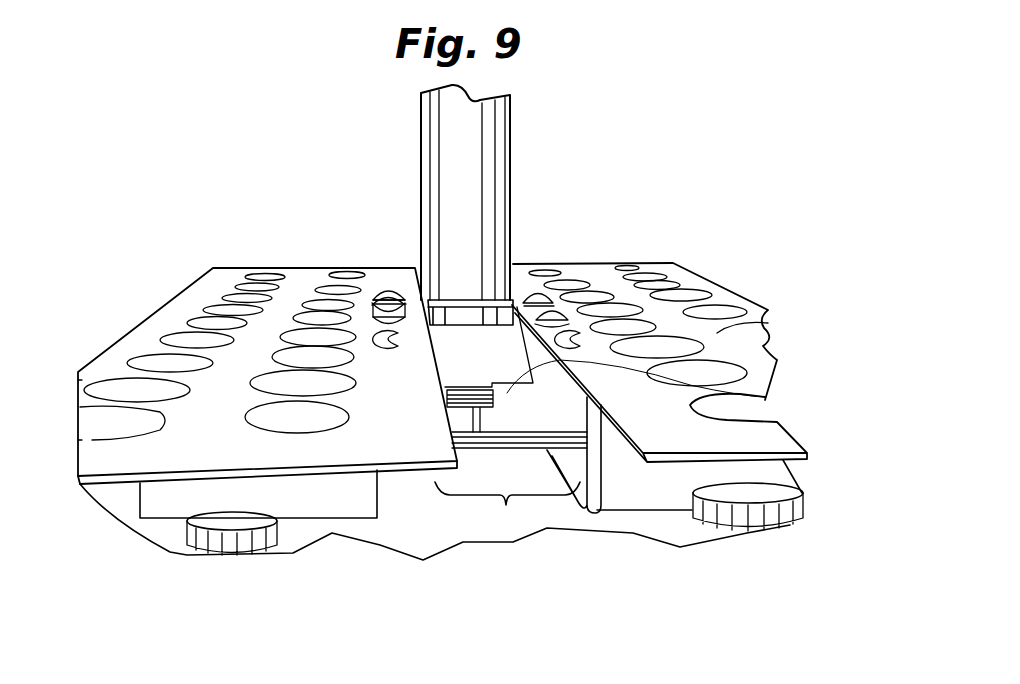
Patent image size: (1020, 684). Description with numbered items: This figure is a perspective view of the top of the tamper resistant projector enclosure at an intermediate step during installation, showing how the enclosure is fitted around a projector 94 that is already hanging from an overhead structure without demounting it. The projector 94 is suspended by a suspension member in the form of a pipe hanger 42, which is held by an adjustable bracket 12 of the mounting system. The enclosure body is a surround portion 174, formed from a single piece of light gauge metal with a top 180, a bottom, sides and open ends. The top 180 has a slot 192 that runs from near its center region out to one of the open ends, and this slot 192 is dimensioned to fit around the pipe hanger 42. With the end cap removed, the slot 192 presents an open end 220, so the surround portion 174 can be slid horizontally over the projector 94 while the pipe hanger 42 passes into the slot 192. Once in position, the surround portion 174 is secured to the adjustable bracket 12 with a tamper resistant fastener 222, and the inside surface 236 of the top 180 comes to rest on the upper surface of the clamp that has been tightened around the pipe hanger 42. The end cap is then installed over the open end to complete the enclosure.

The pipe hanger 42 is at (502, 170).
The adjustable bracket 12 is at (543, 315).
The tamper resistant fastener 222 is at (370, 312).
The surround portion 174 is at (687, 327).
The slot 192 is at (745, 382).
The top 180 is at (231, 450).
The open end 220 is at (518, 468).
The inside surface 236 is at (422, 497).
The projector 94 is at (640, 523).